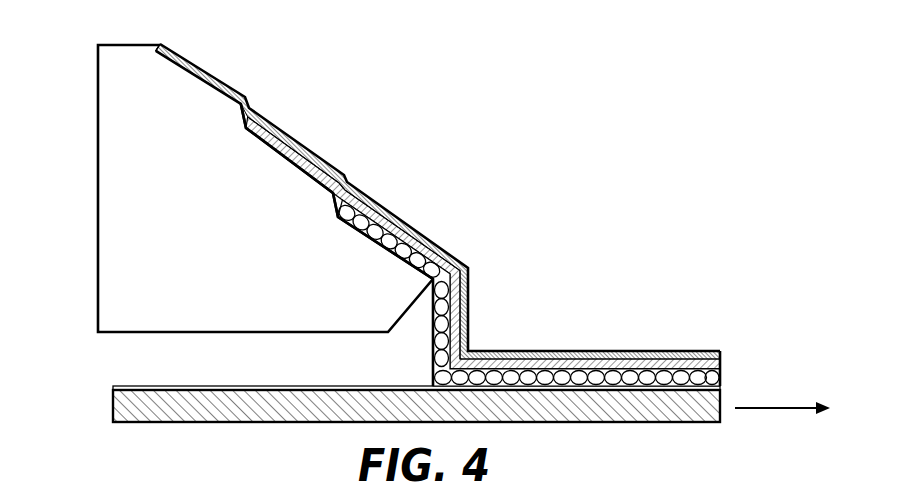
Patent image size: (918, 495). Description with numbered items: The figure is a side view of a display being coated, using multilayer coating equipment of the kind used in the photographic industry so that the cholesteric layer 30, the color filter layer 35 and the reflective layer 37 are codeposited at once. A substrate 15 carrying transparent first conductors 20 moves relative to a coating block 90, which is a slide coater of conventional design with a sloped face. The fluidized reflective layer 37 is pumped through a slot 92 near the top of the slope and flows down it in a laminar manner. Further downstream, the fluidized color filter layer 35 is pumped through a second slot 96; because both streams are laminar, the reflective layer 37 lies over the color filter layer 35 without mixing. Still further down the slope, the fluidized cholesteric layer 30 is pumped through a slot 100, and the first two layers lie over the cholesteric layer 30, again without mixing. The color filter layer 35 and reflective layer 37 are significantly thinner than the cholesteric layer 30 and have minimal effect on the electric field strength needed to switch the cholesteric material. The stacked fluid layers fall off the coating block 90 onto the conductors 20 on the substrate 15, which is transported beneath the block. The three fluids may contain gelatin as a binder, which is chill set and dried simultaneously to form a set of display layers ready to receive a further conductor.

The substrate 15 is at (113, 412).
The transparent first conductors 20 is at (112, 388).
The cholesteric layer 30 is at (720, 378).
The color filter layer 35 is at (722, 362).
The reflective layer 37 is at (693, 352).
The coating block 90 is at (97, 195).
The slot 92 is at (157, 56).
The second slot 96 is at (245, 146).
The slot 100 is at (340, 238).